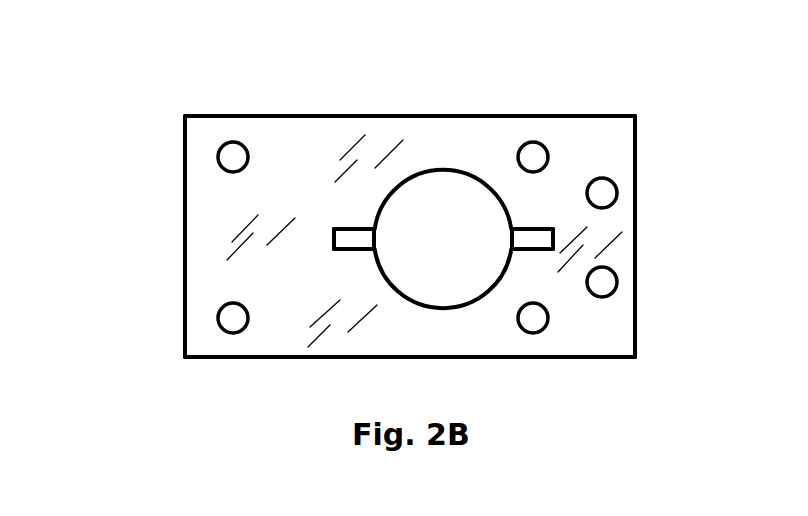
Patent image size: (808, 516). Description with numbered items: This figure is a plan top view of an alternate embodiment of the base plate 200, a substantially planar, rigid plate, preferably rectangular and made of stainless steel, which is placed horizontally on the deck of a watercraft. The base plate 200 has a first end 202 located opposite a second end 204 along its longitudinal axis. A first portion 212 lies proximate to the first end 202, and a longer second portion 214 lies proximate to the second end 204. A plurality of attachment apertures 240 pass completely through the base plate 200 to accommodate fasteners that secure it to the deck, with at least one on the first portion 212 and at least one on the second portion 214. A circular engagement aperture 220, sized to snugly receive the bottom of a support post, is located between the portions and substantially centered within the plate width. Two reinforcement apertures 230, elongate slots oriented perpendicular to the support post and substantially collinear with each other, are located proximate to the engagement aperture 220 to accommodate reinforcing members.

The base plate 200 is at (183, 117).
The first end 202 is at (183, 213).
The second end 204 is at (635, 272).
The first portion 212 is at (543, 340).
The second portion 214 is at (268, 318).
The engagement aperture 220 is at (437, 270).
The reinforcement apertures 230 is at (334, 238).
The attachment apertures 240 is at (233, 157).